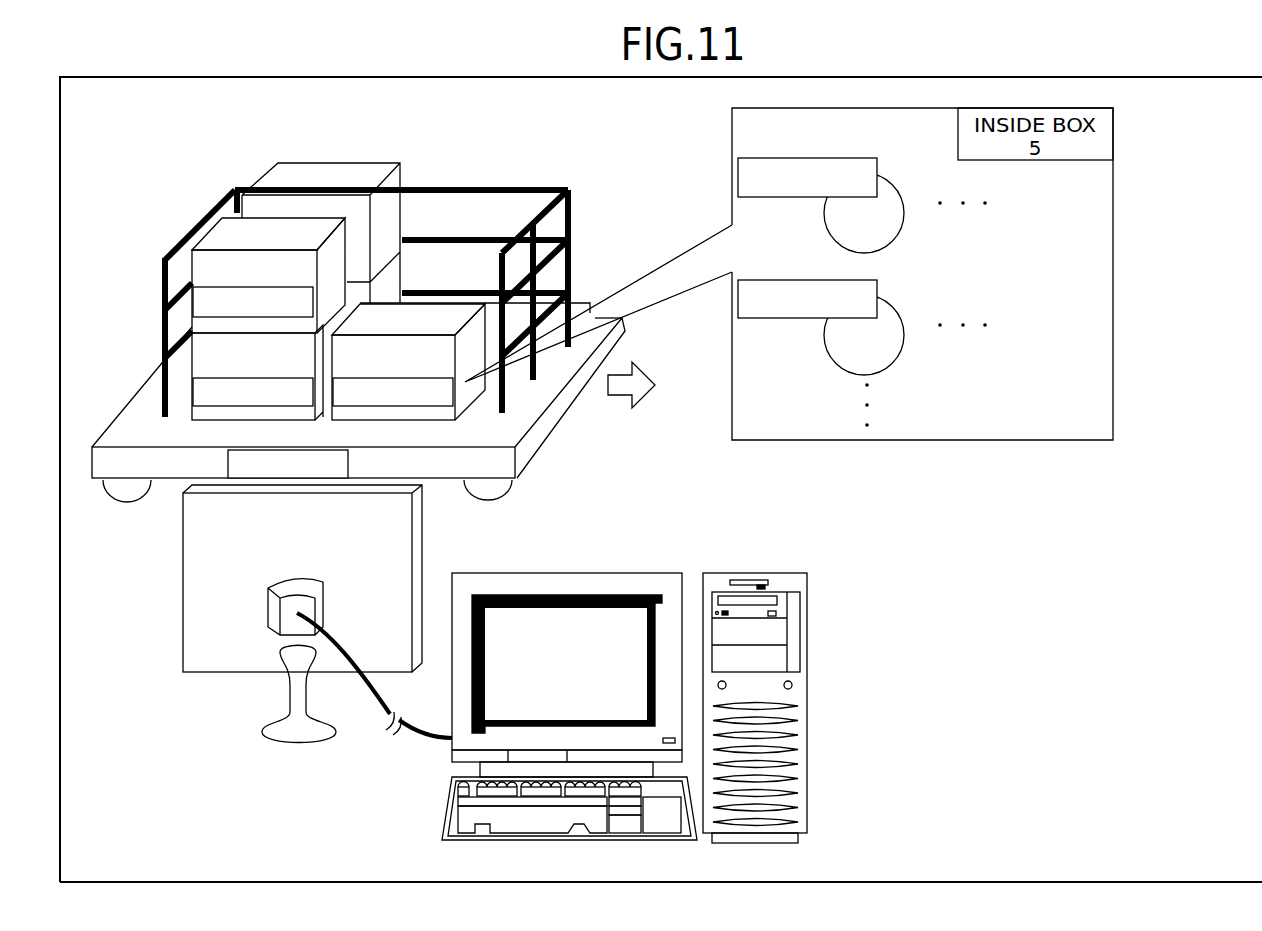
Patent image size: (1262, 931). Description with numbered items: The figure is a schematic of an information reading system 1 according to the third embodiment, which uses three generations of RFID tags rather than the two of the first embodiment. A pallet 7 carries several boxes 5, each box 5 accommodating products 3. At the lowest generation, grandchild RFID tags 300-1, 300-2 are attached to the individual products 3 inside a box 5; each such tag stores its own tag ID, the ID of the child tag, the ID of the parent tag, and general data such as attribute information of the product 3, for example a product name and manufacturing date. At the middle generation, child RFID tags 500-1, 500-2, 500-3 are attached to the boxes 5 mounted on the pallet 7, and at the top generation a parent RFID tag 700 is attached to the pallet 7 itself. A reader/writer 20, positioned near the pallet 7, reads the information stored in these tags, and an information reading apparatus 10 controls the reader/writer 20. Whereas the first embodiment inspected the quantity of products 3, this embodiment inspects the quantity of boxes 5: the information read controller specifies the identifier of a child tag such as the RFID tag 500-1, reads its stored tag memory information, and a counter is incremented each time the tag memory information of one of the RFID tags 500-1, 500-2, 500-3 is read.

The information reading system 1 is at (1077, 57).
The product 3 is at (902, 224).
The box 5 is at (389, 438).
The pallet 7 is at (535, 440).
The information reading apparatus 10 is at (853, 551).
The reader/writer 20 is at (534, 550).
The RFID tag 300-1 is at (860, 158).
The RFID tag 300-2 is at (860, 280).
The RFID tag 500-1 is at (232, 287).
The RFID tag 500-2 is at (229, 378).
The RFID tag 500-3 is at (371, 378).
The RFID tag 700 is at (348, 465).